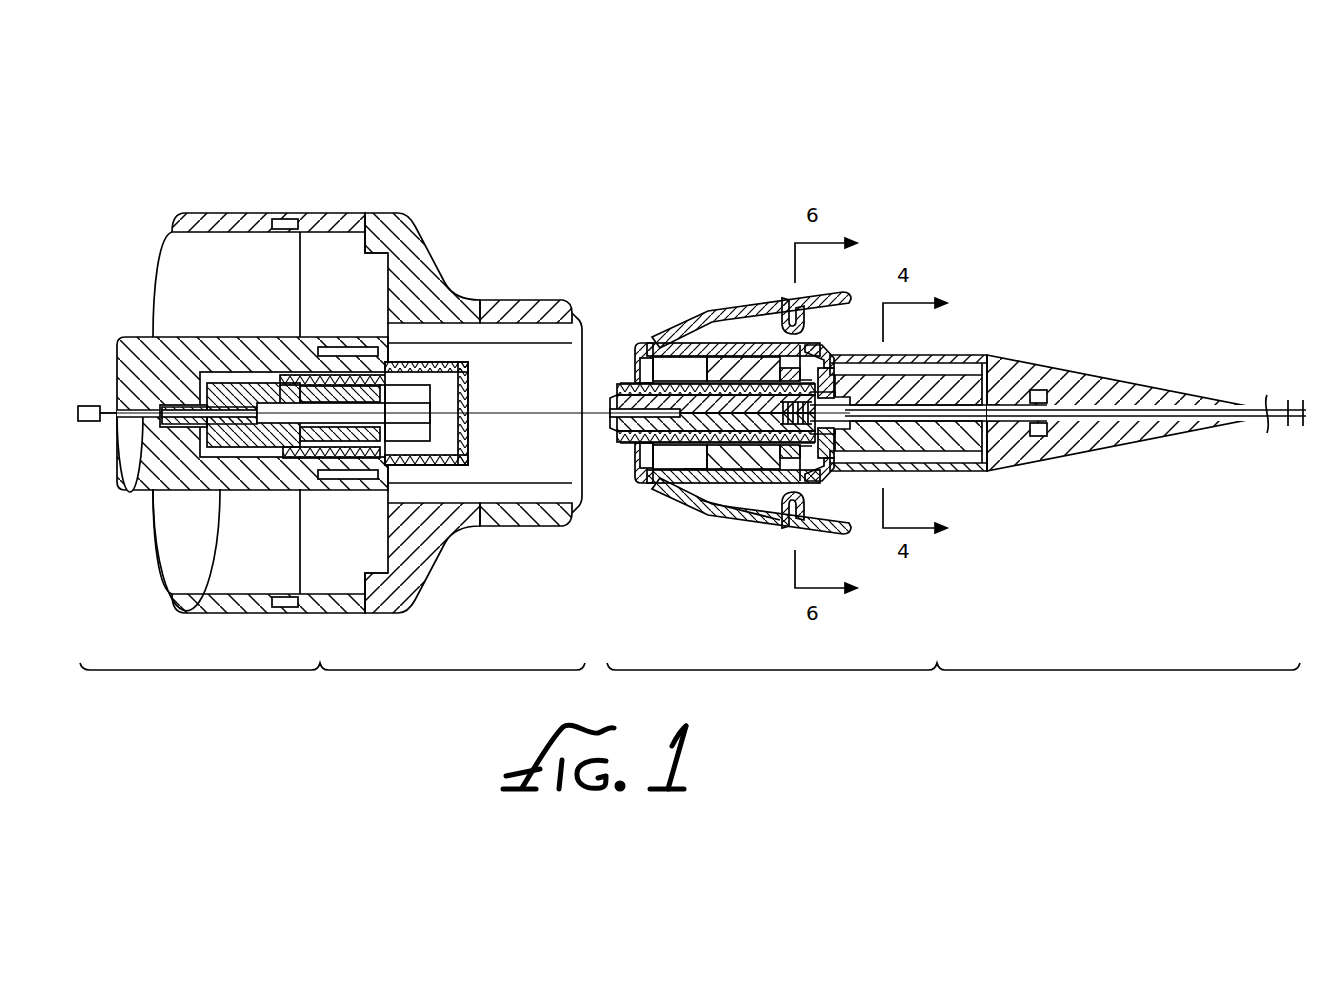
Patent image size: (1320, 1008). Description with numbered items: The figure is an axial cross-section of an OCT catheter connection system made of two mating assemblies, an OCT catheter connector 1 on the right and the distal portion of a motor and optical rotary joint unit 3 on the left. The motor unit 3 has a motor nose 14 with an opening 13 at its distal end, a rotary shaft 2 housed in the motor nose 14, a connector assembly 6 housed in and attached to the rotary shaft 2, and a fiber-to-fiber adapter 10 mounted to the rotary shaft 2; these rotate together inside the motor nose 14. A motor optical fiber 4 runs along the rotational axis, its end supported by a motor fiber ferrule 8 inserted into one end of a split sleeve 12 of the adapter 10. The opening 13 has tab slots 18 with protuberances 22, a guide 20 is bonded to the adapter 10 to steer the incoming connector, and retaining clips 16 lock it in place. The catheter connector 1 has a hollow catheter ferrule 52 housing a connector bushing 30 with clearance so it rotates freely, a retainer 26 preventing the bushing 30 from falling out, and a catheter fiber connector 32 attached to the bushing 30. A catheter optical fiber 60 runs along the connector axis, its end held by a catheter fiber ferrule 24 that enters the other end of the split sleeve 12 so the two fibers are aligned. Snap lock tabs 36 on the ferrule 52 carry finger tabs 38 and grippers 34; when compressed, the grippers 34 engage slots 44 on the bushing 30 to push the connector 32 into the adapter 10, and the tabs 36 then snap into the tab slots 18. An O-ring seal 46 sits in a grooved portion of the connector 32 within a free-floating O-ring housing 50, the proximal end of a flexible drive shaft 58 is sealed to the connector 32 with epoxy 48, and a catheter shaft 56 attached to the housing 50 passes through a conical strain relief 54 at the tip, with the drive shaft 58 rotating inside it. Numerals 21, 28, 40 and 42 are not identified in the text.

The OCT catheter connector 1 is at (953, 684).
The rotary shaft 2 is at (140, 346).
The motor and optical rotary joint unit 3 is at (332, 684).
The motor optical fiber 4 is at (99, 423).
The connector assembly 6 is at (216, 390).
The motor fiber ferrule 8 is at (268, 440).
The fiber-to-fiber adapter 10 is at (295, 372).
The split sleeve 12 is at (332, 460).
The opening 13 is at (575, 350).
The motor nose 14 is at (345, 214).
The retaining clips 16 is at (445, 435).
The tab slots 18 is at (441, 328).
The guide 20 is at (462, 470).
The sleeve end ring 21 is at (470, 458).
The protuberances 22 is at (570, 304).
The catheter fiber ferrule 24 is at (613, 432).
The retainer 26 is at (642, 344).
The lower collar 28 is at (648, 472).
The connector bushing 30 is at (727, 358).
The catheter fiber connector 32 is at (688, 472).
The grippers 34 is at (790, 310).
The snap lock tabs 36 is at (779, 520).
The finger tabs 38 is at (835, 292).
The lower bracket 40 is at (821, 471).
The upper bracket 42 is at (818, 356).
The slots 44 is at (760, 504).
The seal 46 is at (832, 368).
The epoxy 48 is at (814, 430).
The O-ring housing 50 is at (955, 385).
The catheter ferrule 52 is at (982, 472).
The conical strain relief 54 is at (1060, 385).
The catheter shaft 56 is at (1262, 426).
The flexible drive shaft 58 is at (1270, 400).
The catheter optical fiber 60 is at (1303, 427).